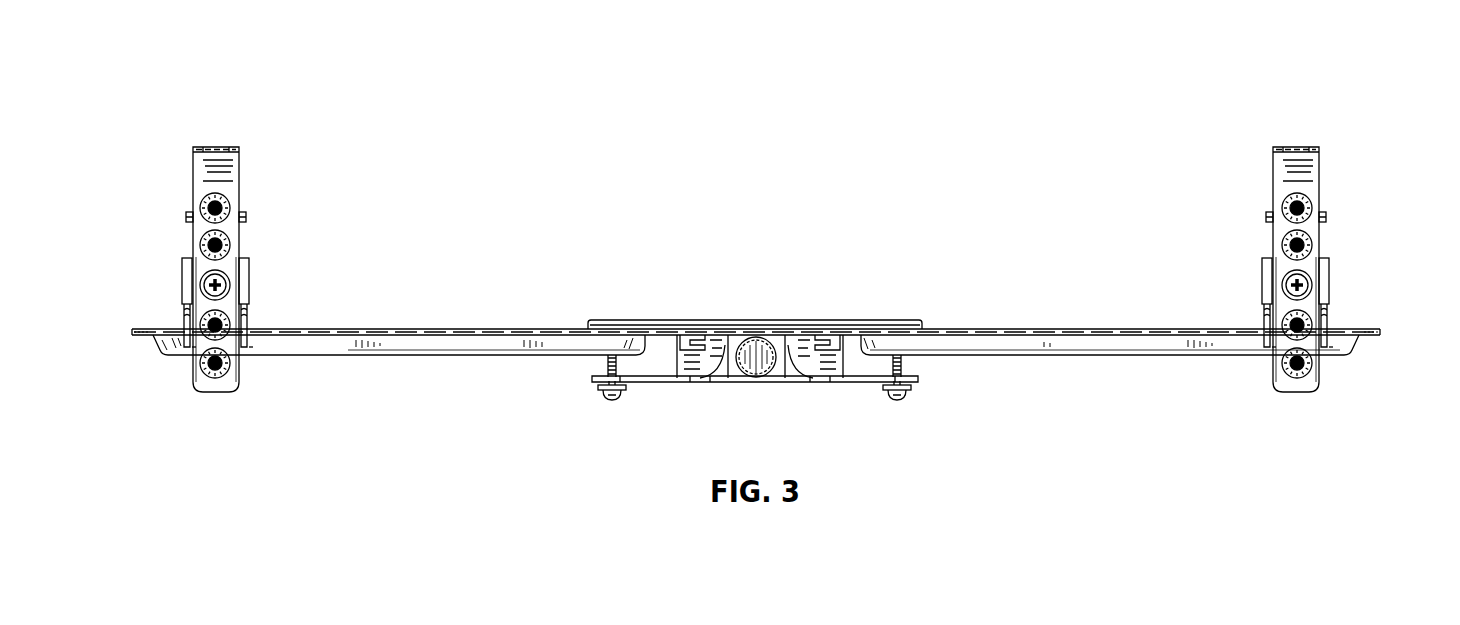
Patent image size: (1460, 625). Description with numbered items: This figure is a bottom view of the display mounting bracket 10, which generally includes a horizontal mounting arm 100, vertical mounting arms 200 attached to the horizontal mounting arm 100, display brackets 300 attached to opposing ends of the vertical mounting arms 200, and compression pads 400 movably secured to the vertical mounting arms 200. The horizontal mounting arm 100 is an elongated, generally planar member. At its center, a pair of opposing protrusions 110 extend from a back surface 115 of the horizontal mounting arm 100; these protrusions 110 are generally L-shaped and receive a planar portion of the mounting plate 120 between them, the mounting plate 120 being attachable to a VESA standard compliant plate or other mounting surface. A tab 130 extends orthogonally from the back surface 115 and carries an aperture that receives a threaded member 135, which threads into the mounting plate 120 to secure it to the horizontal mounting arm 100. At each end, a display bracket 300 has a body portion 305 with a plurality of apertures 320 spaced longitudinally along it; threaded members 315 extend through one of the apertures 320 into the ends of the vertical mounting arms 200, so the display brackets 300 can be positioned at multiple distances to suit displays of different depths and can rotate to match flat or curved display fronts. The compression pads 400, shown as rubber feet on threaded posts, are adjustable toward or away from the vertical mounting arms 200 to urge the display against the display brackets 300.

The display mounting bracket 10 is at (385, 44).
The horizontal mounting arm 100 is at (1108, 322).
The protrusions 110 is at (673, 385).
The back surface 115 is at (856, 350).
The mounting plate 120 is at (645, 385).
The tab 130 is at (752, 330).
The threaded member 135 is at (758, 380).
The vertical mounting arms 200 is at (263, 312).
The display brackets 300 is at (187, 182).
The body portion 305 is at (220, 178).
The threaded members 315 is at (198, 284).
The apertures 320 is at (198, 206).
The compression pads 400 is at (258, 222).